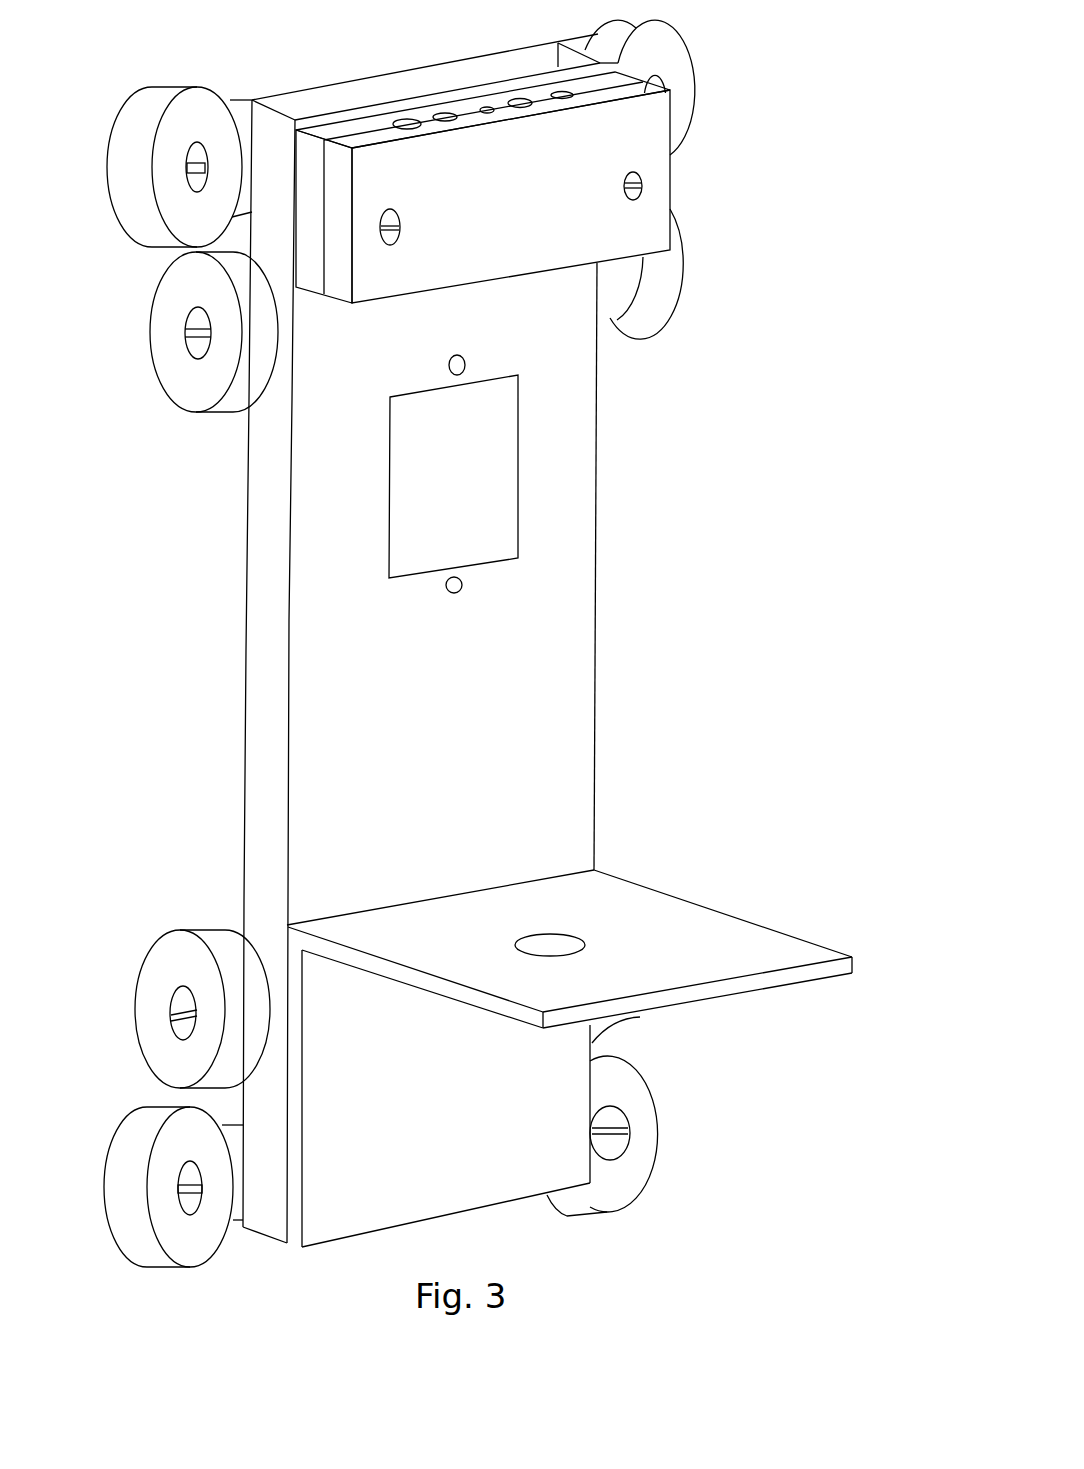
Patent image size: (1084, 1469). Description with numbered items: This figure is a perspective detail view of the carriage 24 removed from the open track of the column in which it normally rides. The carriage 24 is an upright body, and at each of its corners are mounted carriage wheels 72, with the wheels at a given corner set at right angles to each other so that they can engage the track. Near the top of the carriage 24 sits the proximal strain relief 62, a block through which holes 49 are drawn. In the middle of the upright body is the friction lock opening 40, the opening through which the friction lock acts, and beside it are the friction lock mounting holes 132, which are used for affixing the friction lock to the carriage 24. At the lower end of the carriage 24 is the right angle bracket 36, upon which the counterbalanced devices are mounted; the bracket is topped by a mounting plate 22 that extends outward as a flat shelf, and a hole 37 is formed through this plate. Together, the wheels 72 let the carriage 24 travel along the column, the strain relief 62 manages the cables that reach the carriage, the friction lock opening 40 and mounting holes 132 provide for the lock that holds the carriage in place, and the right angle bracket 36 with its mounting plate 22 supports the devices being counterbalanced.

The carriage wheels 72 is at (132, 106).
The holes 49 is at (400, 226).
The proximal strain relief 62 is at (505, 258).
The friction lock opening 40 is at (475, 483).
The friction lock mounting holes 132 is at (450, 370).
The carriage 24 is at (475, 678).
The hole 37 is at (553, 943).
The mounting plate 22 is at (653, 928).
The right angle bracket 36 is at (570, 1107).